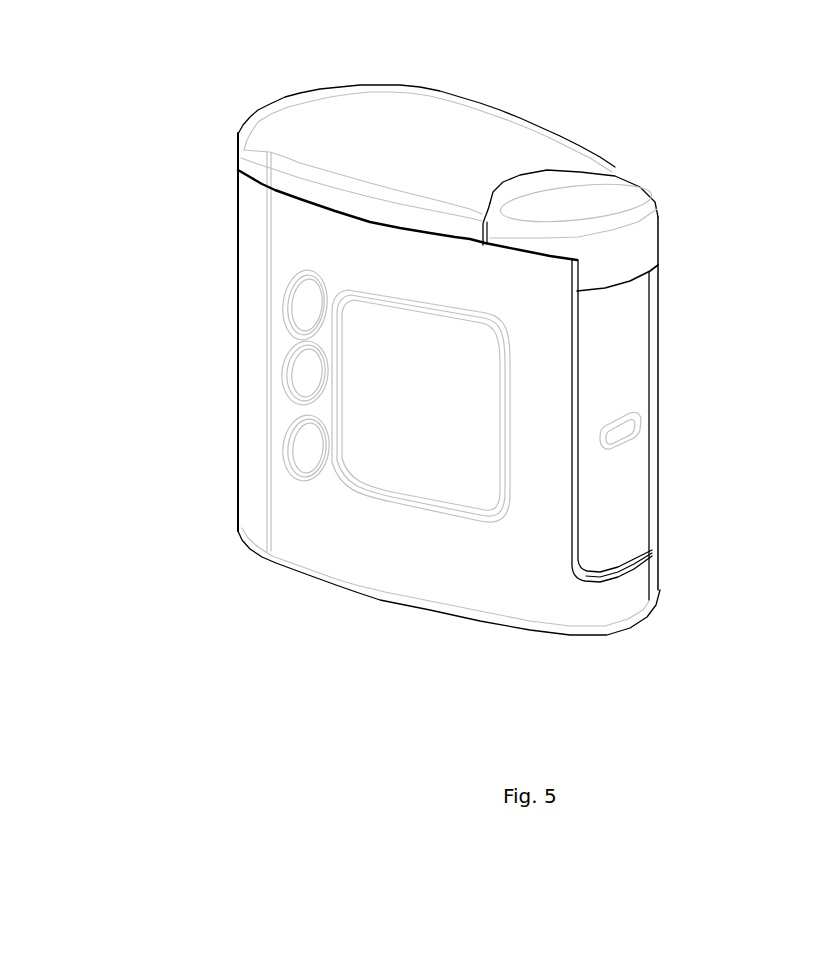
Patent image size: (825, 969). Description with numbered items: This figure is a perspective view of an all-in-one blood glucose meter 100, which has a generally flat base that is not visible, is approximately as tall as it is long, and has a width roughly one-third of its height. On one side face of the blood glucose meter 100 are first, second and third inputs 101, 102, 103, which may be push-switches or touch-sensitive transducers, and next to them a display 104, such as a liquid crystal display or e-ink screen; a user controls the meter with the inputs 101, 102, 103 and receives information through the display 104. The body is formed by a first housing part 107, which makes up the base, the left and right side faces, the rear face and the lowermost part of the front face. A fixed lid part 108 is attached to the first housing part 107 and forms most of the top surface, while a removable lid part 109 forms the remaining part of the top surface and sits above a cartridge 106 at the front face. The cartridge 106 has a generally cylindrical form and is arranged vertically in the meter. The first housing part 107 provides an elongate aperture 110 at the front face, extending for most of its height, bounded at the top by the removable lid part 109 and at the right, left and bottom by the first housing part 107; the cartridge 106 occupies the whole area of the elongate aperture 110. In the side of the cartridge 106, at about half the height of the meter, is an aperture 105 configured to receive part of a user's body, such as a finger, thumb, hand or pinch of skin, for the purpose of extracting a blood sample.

The blood glucose meter 100 is at (117, 100).
The first input 101 is at (297, 303).
The second input 102 is at (297, 375).
The third input 103 is at (298, 442).
The display 104 is at (397, 463).
The aperture 105 is at (620, 432).
The cartridge 106 is at (620, 332).
The first housing part 107 is at (508, 578).
The fixed lid part 108 is at (427, 135).
The removable lid part 109 is at (603, 210).
The elongate aperture 110 is at (608, 508).